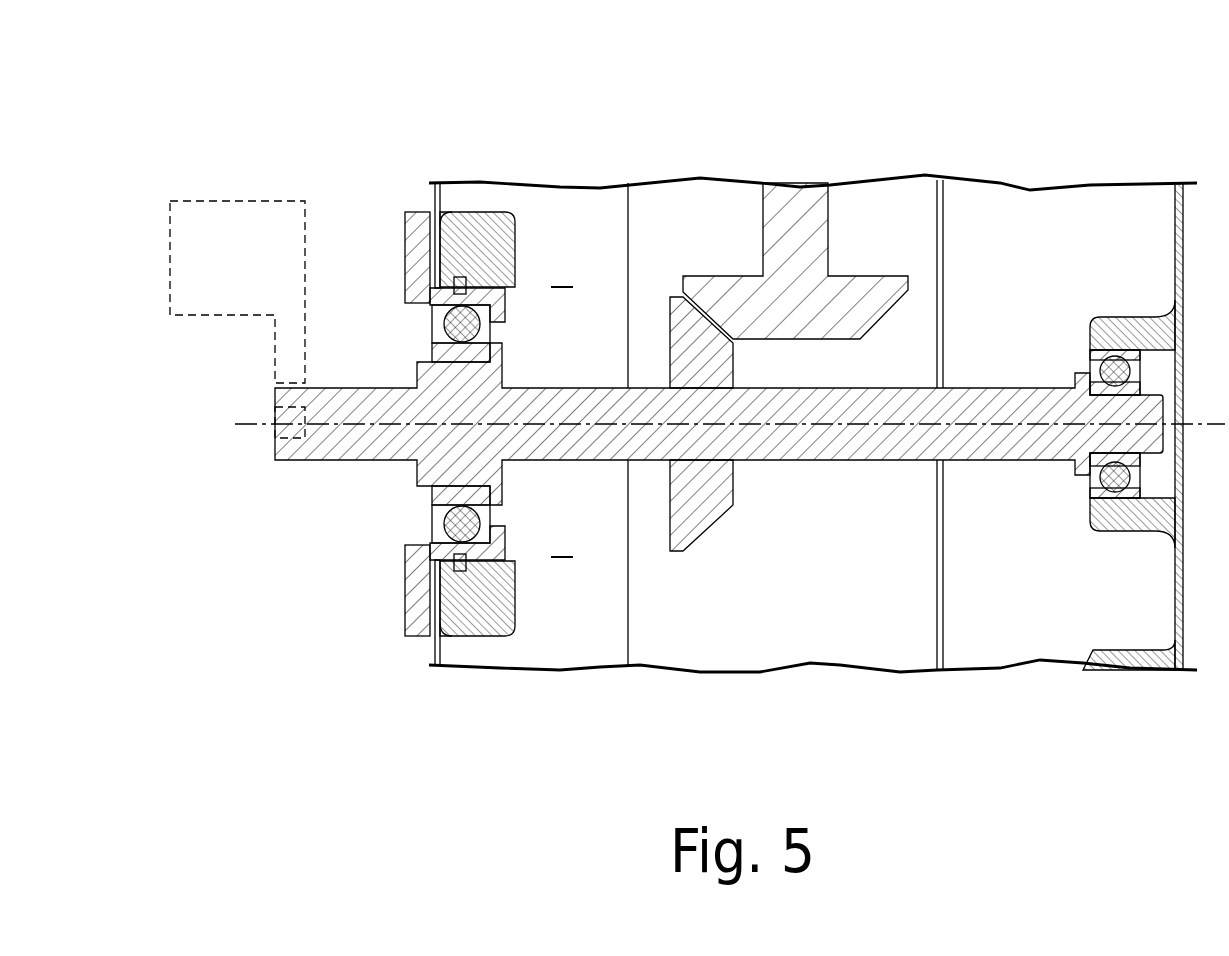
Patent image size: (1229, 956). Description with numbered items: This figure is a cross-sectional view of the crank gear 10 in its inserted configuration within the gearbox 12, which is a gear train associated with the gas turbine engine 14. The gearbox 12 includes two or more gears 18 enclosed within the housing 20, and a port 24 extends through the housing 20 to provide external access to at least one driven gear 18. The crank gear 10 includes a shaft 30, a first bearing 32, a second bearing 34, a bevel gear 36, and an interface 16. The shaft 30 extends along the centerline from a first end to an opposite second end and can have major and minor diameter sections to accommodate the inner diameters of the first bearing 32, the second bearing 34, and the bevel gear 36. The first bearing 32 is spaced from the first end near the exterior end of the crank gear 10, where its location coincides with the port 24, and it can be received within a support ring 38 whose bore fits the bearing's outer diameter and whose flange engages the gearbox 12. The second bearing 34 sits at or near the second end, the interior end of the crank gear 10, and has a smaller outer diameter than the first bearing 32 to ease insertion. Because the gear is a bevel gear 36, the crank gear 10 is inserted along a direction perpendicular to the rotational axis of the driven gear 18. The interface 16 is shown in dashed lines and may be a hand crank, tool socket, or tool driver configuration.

The crank gear 10 is at (132, 63).
The gearbox 12 is at (813, 367).
The gas turbine engine 14 is at (1070, 147).
The interface 16 is at (232, 340).
The gear 18 is at (742, 243).
The housing 20 is at (481, 183).
The port 24 is at (562, 588).
The shaft 30 is at (865, 462).
The first bearing 32 is at (424, 414).
The second bearing 34 is at (1090, 352).
The bevel gear 36 is at (703, 528).
The support ring 38 is at (398, 195).